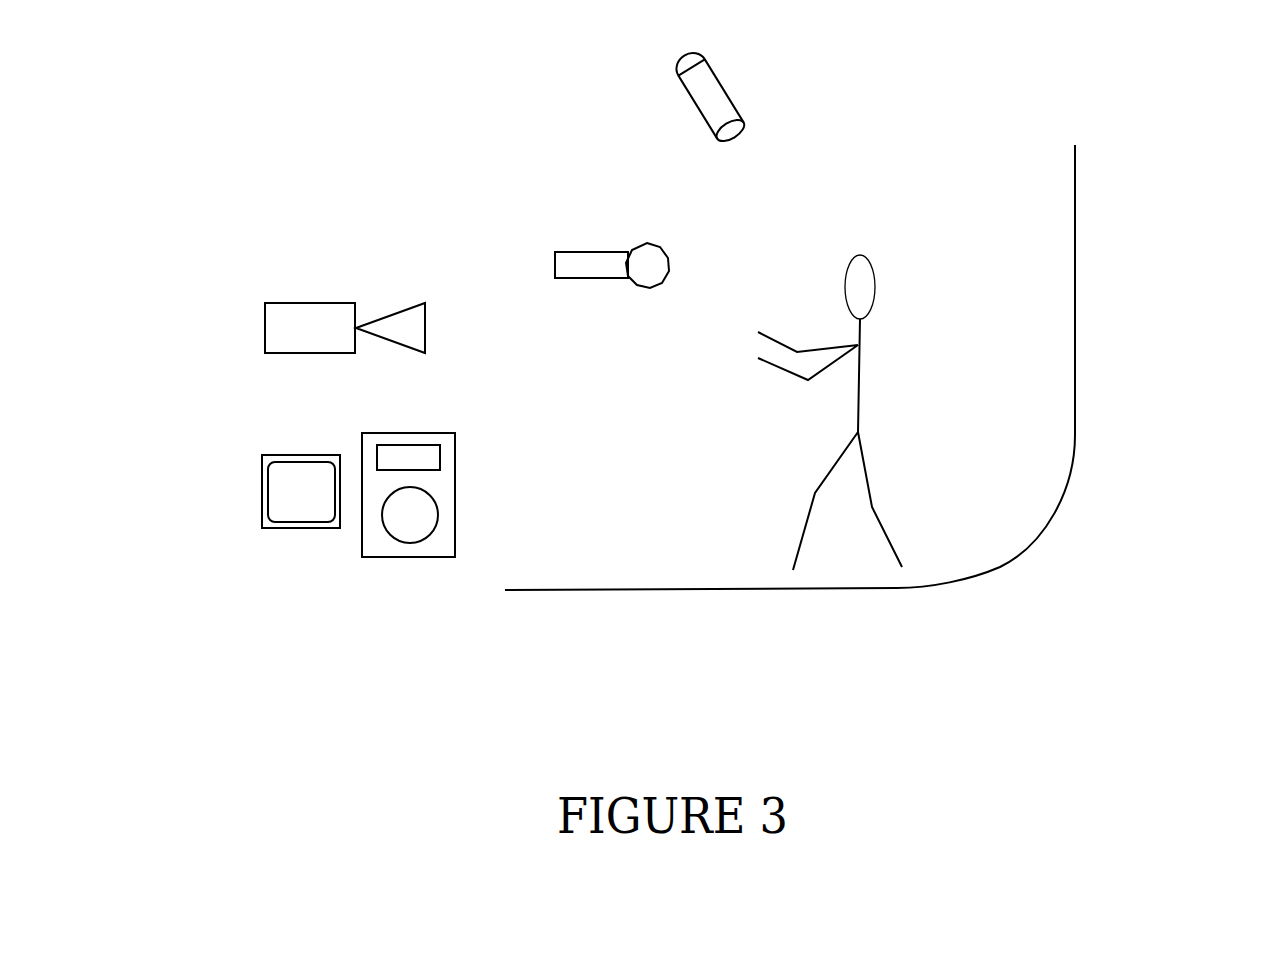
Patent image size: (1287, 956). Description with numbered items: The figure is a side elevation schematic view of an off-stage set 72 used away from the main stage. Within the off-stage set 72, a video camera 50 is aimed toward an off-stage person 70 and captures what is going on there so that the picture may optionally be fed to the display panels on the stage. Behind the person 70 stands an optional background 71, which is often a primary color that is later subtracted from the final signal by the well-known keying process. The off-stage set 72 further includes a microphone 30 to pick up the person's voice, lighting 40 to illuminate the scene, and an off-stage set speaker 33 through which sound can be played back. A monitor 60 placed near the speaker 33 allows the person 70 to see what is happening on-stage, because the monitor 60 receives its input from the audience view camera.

The microphone 30 is at (578, 249).
The off-stage set speaker 33 is at (416, 567).
The lighting 40 is at (698, 106).
The video camera 50 is at (324, 312).
The monitor 60 is at (300, 532).
The off-stage person 70 is at (872, 255).
The background 71 is at (1083, 251).
The off-stage set 72 is at (1111, 360).